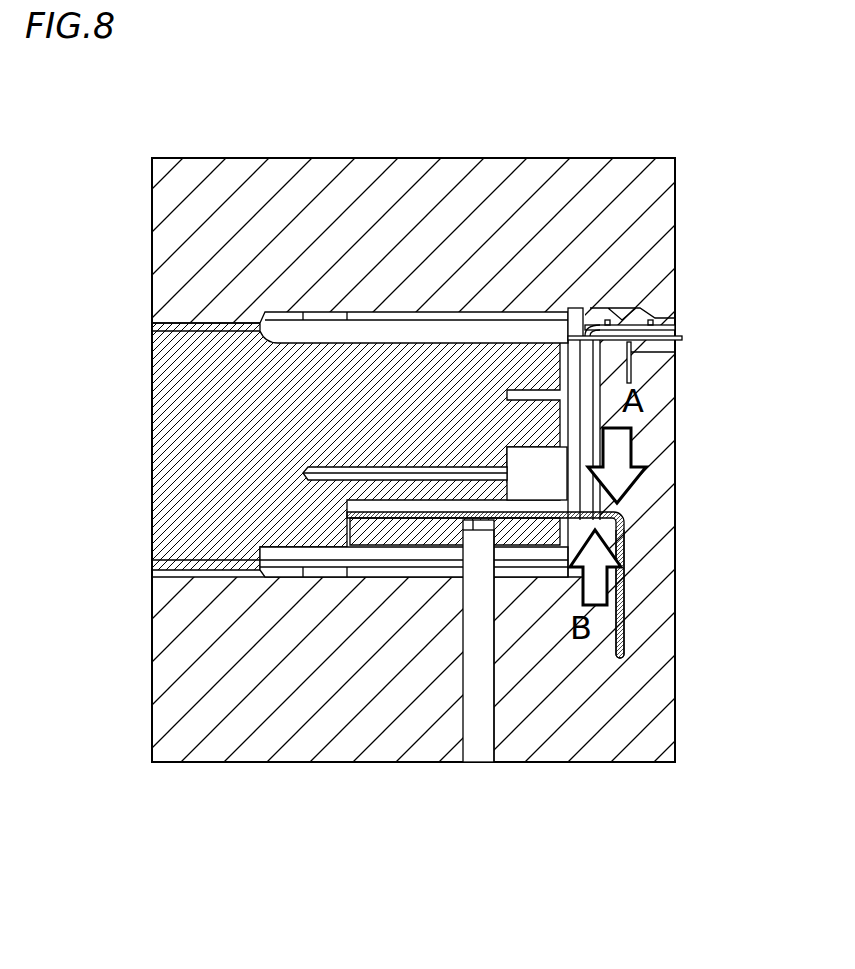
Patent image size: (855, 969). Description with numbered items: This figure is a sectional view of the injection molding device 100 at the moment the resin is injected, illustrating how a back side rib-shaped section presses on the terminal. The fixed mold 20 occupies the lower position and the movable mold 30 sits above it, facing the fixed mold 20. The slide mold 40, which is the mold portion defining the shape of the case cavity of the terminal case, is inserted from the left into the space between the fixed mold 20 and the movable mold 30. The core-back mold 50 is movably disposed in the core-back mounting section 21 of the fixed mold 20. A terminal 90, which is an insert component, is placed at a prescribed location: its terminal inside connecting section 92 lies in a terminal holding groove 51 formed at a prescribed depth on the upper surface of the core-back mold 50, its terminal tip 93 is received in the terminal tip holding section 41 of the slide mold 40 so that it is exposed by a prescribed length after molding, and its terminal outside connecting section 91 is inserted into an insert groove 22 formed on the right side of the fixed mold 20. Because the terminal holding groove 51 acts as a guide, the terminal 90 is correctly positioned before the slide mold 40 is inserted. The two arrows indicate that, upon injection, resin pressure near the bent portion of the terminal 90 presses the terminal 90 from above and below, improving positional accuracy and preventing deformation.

The injection molding device 100 is at (195, 88).
The movable mold 30 is at (167, 200).
The fixed mold 20 is at (265, 748).
The core-back mounting section 21 is at (487, 712).
The slide mold 40 is at (192, 428).
The terminal tip holding section 41 is at (292, 598).
The terminal inside connecting section 92 is at (455, 522).
The terminal tip 93 is at (397, 507).
The core-back mold 50 is at (477, 740).
The terminal holding groove 51 is at (495, 632).
The terminal 90 is at (655, 480).
The insert groove 22 is at (625, 565).
The terminal outside connecting section 91 is at (628, 643).